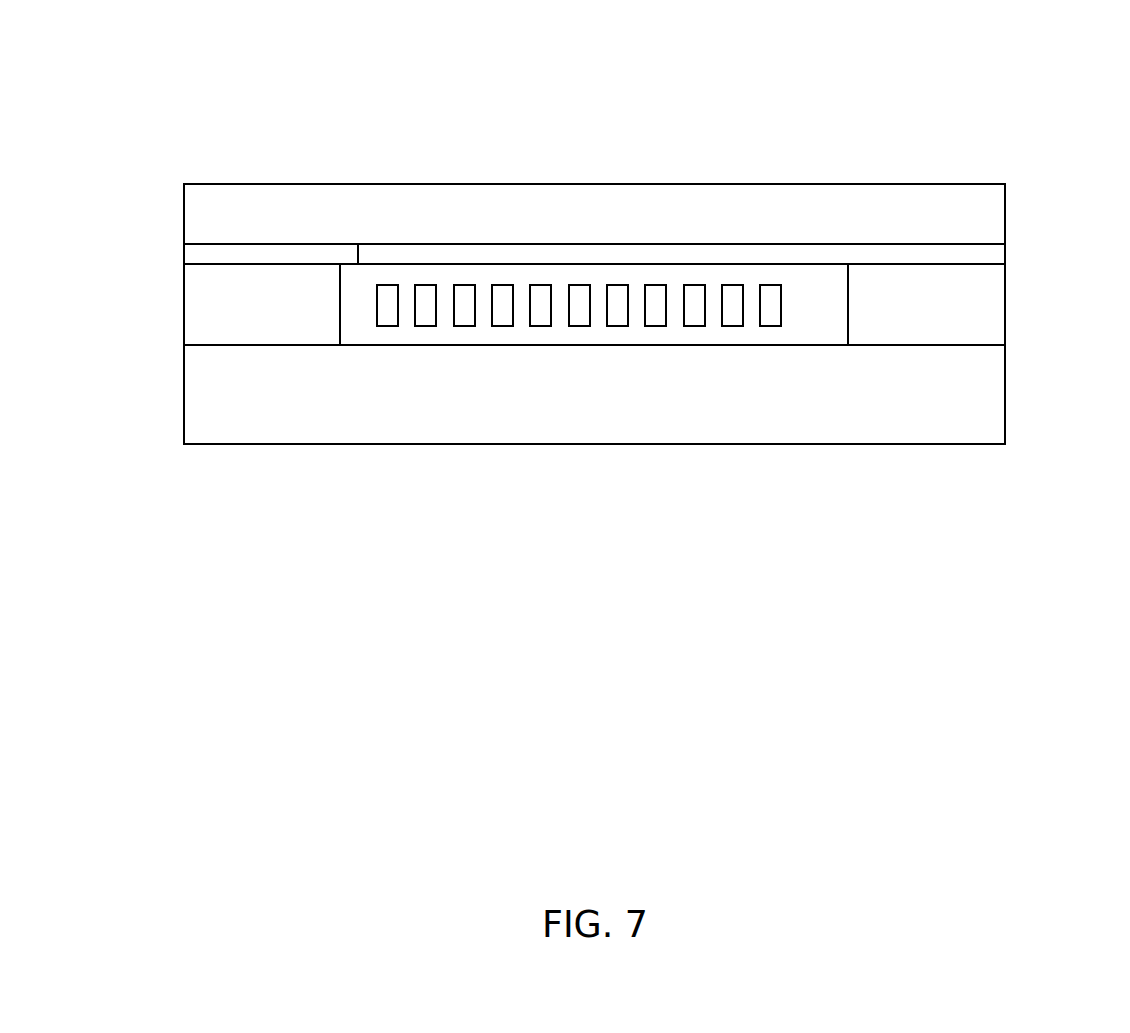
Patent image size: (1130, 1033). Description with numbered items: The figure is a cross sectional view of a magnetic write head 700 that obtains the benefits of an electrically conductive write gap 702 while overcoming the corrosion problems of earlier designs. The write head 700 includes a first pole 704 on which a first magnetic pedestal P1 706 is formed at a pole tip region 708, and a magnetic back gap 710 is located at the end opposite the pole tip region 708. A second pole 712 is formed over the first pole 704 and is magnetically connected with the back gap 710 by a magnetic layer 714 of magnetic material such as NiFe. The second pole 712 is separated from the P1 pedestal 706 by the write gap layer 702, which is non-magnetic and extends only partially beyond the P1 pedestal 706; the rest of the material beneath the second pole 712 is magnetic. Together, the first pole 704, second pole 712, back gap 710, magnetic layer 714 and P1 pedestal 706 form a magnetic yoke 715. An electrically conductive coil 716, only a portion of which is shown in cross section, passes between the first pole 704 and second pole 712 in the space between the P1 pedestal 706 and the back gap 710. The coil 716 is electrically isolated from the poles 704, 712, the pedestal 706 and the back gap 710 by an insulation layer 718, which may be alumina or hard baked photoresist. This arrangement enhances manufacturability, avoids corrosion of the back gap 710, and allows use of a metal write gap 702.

The magnetic write head 700 is at (702, 477).
The write gap layer 702 is at (210, 253).
The first pole 704 is at (330, 403).
The first magnetic pedestal P1 706 is at (203, 315).
The pole tip region 708 is at (203, 373).
The magnetic back gap 710 is at (967, 317).
The second pole 712 is at (652, 205).
The magnetic layer 714 is at (755, 255).
The magnetic yoke 715 is at (920, 184).
The electrically conductive coil 716 is at (467, 329).
The insulation layer 718 is at (820, 315).